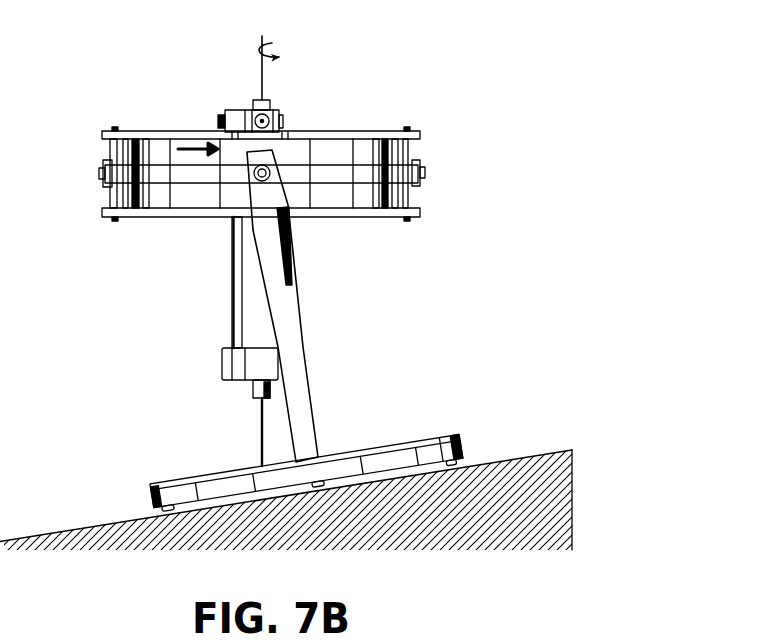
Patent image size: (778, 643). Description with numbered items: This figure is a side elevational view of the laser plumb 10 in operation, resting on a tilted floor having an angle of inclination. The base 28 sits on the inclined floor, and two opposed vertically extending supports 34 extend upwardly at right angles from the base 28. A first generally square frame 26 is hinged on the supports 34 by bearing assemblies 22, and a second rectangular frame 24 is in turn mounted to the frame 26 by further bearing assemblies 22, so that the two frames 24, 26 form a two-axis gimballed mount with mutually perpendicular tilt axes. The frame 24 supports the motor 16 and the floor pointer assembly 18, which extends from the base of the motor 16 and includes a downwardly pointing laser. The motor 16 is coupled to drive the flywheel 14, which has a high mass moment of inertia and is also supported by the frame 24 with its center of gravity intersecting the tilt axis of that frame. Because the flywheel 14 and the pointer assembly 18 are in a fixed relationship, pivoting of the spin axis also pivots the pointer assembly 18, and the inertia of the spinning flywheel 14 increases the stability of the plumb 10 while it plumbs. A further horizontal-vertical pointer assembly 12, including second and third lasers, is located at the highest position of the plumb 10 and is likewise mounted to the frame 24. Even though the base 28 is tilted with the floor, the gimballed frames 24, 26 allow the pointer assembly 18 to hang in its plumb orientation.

The laser plumb 10 is at (487, 101).
The horizontal-vertical pointer assembly 12 is at (238, 110).
The flywheel 14 is at (340, 148).
The motor 16 is at (238, 363).
The floor pointer assembly 18 is at (256, 393).
The bearing assemblies 22 is at (261, 181).
The second rectangular frame 24 is at (168, 130).
The first generally square frame 26 is at (147, 175).
The base 28 is at (155, 484).
The vertically extending supports 34 is at (298, 393).